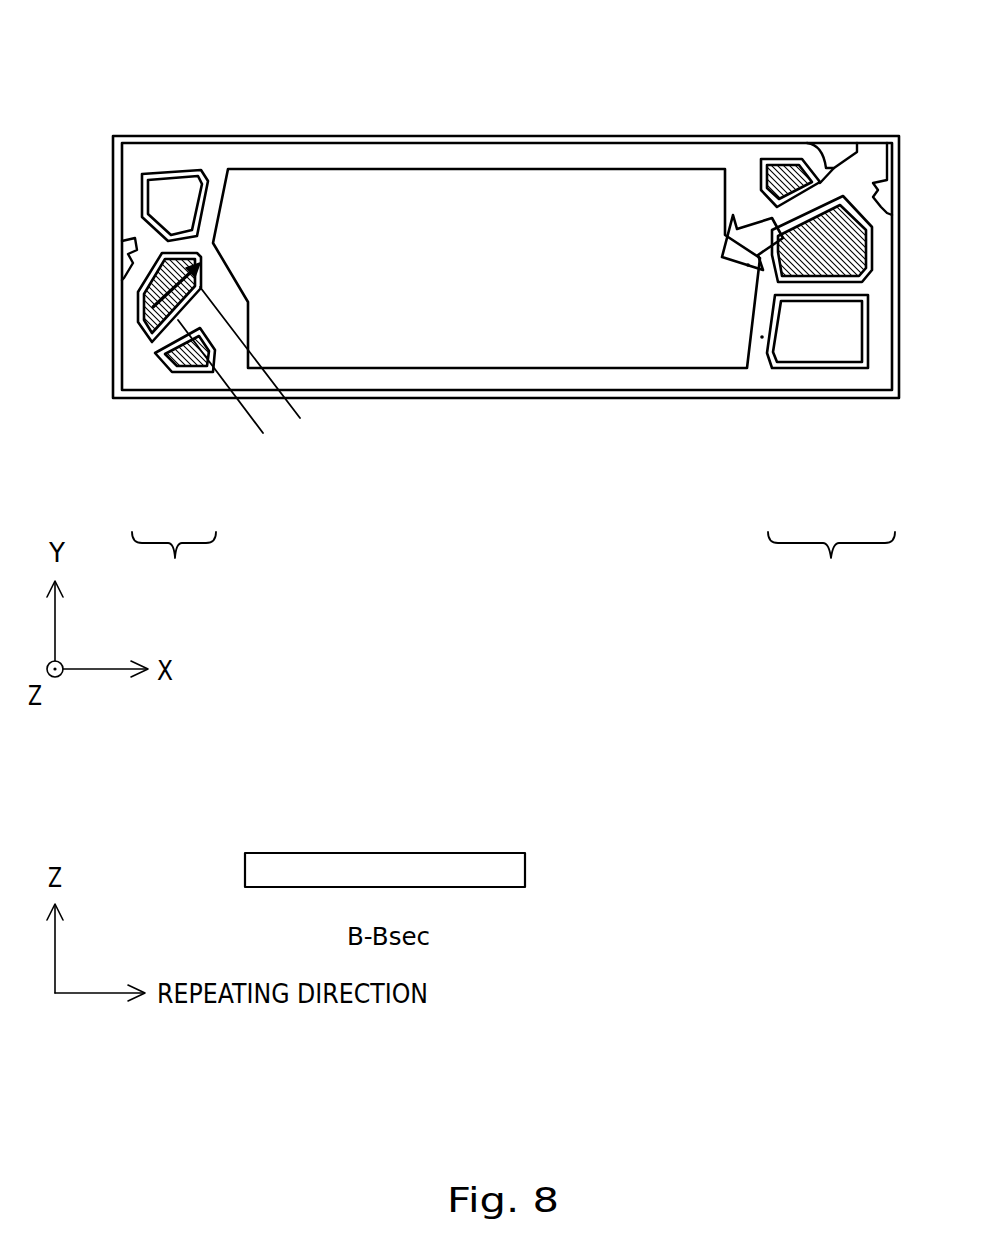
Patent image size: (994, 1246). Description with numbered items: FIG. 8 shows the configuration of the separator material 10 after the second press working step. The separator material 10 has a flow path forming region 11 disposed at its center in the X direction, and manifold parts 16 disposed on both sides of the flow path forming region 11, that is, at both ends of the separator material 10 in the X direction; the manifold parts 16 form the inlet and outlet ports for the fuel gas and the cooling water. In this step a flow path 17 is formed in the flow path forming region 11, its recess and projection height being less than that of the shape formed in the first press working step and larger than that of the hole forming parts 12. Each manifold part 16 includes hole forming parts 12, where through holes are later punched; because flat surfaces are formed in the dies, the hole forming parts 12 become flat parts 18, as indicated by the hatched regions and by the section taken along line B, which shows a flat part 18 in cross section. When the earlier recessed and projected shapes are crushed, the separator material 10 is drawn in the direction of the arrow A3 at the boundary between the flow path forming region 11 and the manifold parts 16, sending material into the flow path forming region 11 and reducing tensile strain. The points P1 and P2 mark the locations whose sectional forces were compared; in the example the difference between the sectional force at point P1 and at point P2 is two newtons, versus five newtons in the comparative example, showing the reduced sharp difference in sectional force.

The separator material 10 is at (50, 29).
The flow path forming region 11 is at (417, 370).
The hole forming part 12 is at (156, 196).
The manifold part 16 is at (513, 565).
The flow path 17 is at (343, 195).
The flat part 18 is at (141, 338).
The arrow A3 is at (727, 243).
The section line B- B is at (235, 364).
The point P1 is at (748, 266).
The point P2 is at (762, 338).